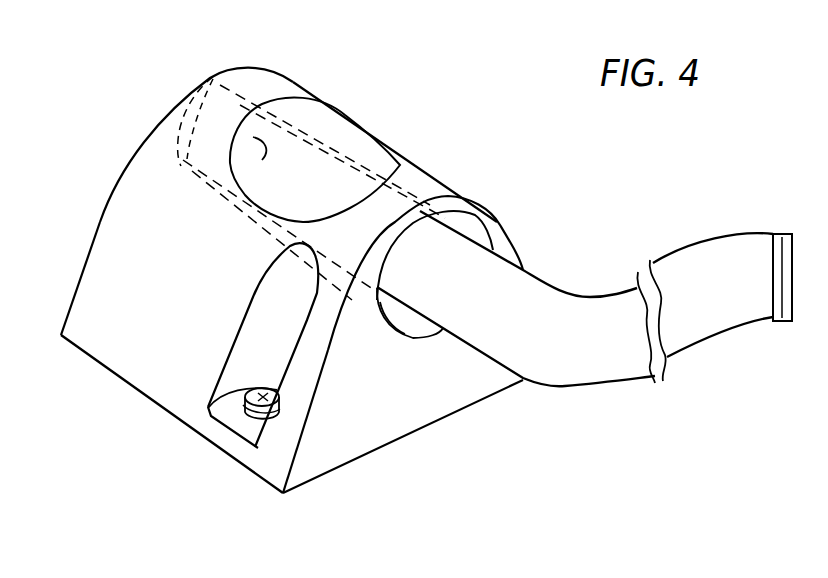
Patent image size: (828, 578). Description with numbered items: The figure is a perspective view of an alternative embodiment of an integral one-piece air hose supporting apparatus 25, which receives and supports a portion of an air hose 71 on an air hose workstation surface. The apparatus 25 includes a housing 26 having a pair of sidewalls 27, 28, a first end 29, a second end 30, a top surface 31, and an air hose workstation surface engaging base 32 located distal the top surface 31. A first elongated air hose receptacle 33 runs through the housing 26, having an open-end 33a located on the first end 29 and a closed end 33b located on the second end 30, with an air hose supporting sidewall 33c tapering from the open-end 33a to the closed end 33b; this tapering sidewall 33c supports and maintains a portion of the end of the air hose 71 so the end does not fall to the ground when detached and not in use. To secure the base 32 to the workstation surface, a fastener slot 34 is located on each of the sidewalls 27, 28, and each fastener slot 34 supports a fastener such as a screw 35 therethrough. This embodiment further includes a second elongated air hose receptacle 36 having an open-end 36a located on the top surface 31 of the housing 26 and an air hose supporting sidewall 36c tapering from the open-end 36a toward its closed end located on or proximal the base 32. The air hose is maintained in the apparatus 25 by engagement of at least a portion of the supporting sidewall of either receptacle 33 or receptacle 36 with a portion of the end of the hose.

The integral one-piece air hose supporting apparatus 25 is at (473, 117).
The housing 26 is at (281, 495).
The sidewall 27 is at (105, 348).
The sidewall 28 is at (523, 270).
The first end 29 is at (443, 393).
The second end 30 is at (100, 218).
The top surface 31 is at (175, 117).
The air hose workstation surface engaging base 32 is at (157, 407).
The first elongated air hose receptacle 33 is at (483, 233).
The open-end 33a is at (407, 337).
The closed end 33b is at (212, 76).
The air hose supporting sidewall 33c is at (400, 324).
The fastener slot 34 is at (247, 432).
The screw 35 is at (267, 414).
The second elongated air hose receptacle 36 is at (337, 143).
The open-end 36a is at (401, 166).
The air hose supporting sidewall 36c is at (232, 163).
The air hose 71 is at (563, 381).